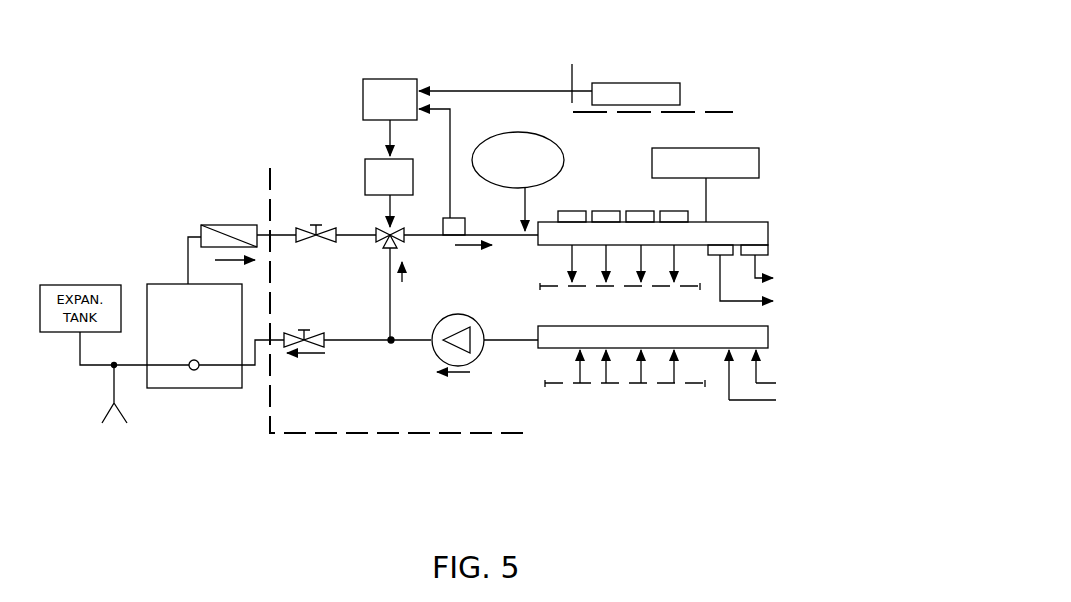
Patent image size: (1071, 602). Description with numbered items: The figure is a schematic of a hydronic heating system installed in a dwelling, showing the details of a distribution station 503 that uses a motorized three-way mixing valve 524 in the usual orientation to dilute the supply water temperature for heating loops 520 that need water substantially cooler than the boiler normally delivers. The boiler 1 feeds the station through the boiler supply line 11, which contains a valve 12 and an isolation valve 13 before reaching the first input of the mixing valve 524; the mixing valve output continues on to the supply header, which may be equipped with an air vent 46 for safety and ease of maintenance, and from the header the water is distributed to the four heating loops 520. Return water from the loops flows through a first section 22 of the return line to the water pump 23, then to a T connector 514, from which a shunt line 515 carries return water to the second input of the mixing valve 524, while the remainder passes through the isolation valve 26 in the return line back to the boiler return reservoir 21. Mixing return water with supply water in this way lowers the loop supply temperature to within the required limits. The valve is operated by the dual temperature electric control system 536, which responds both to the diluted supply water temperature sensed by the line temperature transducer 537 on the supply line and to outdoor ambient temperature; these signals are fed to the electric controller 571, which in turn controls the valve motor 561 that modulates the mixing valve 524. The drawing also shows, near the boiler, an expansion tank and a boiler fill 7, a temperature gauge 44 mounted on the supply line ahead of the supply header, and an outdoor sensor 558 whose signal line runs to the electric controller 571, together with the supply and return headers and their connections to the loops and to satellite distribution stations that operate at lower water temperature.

The boiler 1 is at (197, 388).
The boiler fill 7 is at (112, 380).
The boiler supply line 11 is at (188, 237).
The valve 12 is at (210, 225).
The isolation valve 13 is at (316, 225).
The boiler return reservoir 21 is at (198, 360).
The first section 22 is at (492, 342).
The water pump 23 is at (463, 315).
The isolation valve 26 is at (307, 329).
The temperature gauge 44 is at (560, 141).
The air vent 46 is at (705, 148).
The distribution station 503 is at (270, 413).
The T connector 514 is at (388, 343).
The shunt line 515 is at (391, 325).
The heating loops 520 is at (573, 470).
The mixing valve 524 is at (405, 238).
The valve dual temperature electric control system 536 is at (290, 147).
The line temperature transducer 537 is at (465, 226).
The outdoor sensor 558 is at (680, 95).
The valve motor 561 is at (413, 160).
The electric controller 571 is at (363, 104).